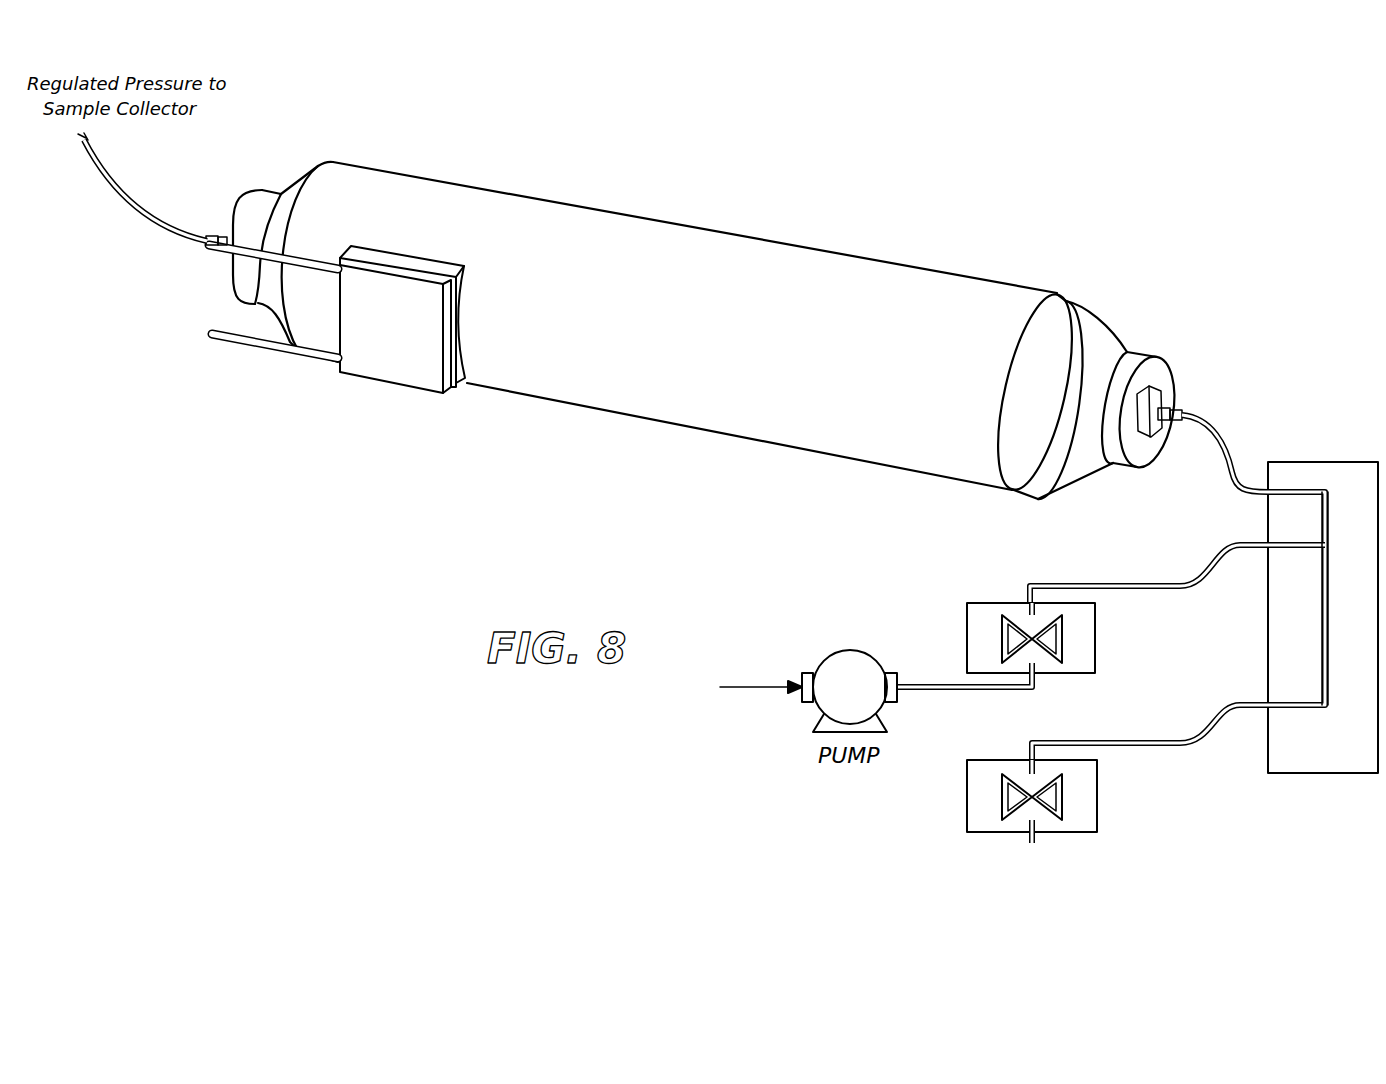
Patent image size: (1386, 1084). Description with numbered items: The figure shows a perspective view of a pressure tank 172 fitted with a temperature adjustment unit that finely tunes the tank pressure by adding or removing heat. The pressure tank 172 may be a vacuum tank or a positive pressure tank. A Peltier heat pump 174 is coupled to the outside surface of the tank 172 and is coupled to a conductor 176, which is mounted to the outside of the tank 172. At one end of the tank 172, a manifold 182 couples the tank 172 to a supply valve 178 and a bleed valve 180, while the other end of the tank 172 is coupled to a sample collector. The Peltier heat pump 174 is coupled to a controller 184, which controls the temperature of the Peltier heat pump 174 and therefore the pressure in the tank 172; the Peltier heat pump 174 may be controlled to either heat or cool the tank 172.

The pressure tank 172 is at (800, 283).
The Peltier heat pump 174 is at (400, 300).
The conductor 176 is at (365, 252).
The supply valve 178 is at (983, 610).
The bleed valve 180 is at (983, 822).
The manifold 182 is at (1323, 470).
The controller 184 is at (205, 247).